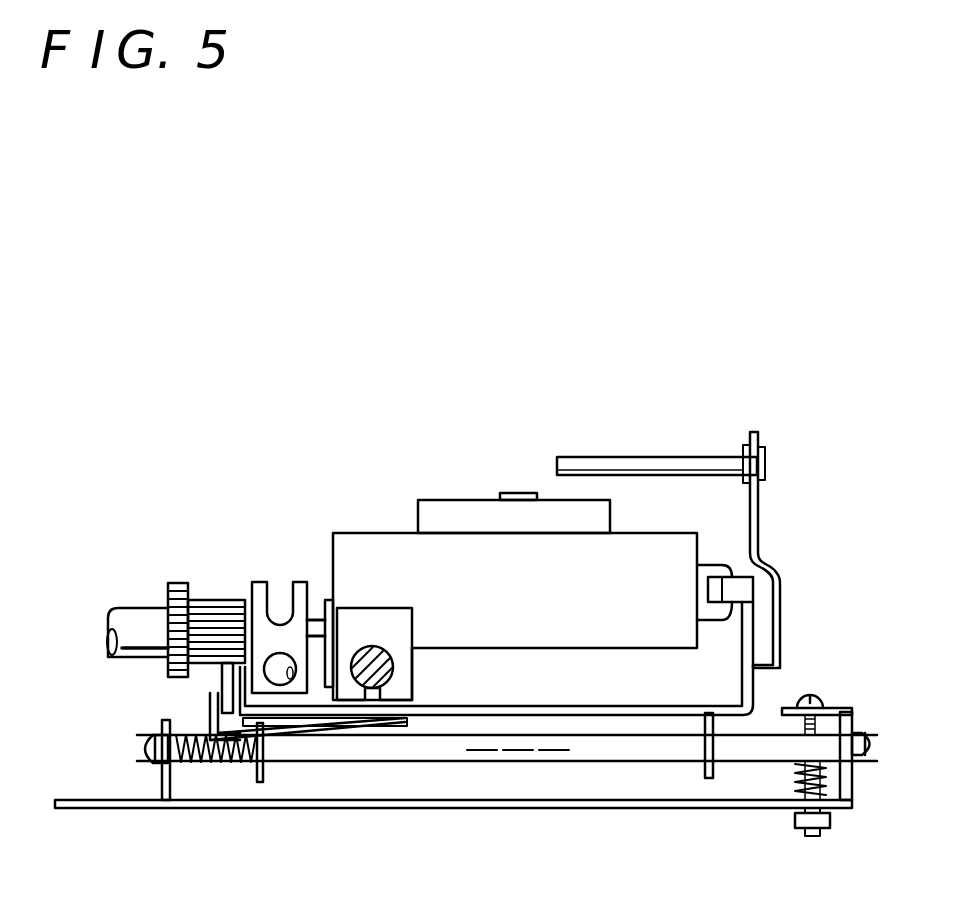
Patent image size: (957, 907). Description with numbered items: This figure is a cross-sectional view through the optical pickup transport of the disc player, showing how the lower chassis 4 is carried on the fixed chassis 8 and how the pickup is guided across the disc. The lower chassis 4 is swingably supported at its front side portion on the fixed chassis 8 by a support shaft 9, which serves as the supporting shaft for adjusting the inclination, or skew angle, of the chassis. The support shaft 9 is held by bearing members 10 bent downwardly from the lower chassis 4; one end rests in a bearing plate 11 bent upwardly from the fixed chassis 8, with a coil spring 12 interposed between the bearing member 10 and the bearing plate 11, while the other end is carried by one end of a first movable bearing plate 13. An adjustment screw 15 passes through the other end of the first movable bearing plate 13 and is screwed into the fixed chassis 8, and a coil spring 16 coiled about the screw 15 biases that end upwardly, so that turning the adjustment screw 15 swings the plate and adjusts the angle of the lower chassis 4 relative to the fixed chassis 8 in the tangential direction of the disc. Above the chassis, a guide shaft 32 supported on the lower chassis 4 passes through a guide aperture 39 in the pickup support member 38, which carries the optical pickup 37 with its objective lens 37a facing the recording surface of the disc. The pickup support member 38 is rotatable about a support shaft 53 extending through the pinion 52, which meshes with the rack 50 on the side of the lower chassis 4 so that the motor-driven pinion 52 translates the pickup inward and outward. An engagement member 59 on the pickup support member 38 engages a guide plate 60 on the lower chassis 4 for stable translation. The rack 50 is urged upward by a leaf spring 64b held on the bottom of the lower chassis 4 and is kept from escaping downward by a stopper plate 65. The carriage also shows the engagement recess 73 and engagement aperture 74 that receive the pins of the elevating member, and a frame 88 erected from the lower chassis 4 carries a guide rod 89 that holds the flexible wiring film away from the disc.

The lower chassis 4 is at (588, 712).
The fixed chassis 8 is at (683, 808).
The support shaft 9 is at (497, 755).
The bearing member 10 is at (265, 752).
The bearing plate 11 is at (162, 782).
The coil spring 12 is at (190, 772).
The first movable bearing plate 13 is at (835, 698).
The adjustment screw 15 is at (828, 815).
The coil spring 16 is at (827, 770).
The guide shaft 32 is at (392, 670).
The optical pickup 37 is at (450, 512).
The objective lens 37a is at (518, 493).
The pickup support member 38 is at (653, 548).
The guide aperture 39 is at (388, 645).
The rack 50 is at (216, 666).
The pinion 52 is at (219, 600).
The support shaft 53 is at (318, 617).
The engagement member 59 is at (722, 567).
The guide plate 60 is at (740, 590).
The leaf spring 64b is at (235, 765).
The stopper plate 65 is at (208, 700).
The engagement recess 73 is at (268, 590).
The engagement aperture 74 is at (290, 680).
The frame 88 is at (758, 492).
The guide rod 89 is at (641, 462).